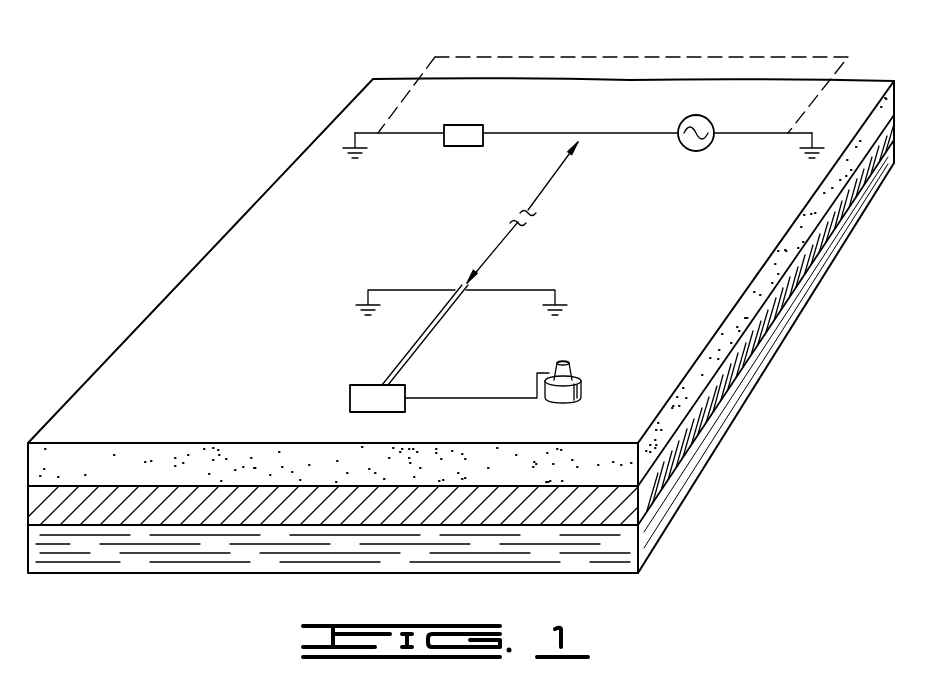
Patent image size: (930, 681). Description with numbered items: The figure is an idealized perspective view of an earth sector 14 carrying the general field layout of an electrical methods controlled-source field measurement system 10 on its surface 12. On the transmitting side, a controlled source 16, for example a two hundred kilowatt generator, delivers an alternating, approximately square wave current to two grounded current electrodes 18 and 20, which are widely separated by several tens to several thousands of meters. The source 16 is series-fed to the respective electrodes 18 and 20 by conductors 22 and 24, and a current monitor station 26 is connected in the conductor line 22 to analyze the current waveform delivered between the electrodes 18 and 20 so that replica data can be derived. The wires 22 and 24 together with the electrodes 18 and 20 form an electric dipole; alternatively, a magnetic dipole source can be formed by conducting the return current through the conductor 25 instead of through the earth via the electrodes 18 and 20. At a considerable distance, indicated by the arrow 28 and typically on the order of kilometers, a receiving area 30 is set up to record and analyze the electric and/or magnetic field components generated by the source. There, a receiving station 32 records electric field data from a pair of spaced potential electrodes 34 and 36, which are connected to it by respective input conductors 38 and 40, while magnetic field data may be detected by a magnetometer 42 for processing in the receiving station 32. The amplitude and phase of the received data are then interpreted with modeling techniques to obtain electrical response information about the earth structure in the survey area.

The field measurement system 10 is at (637, 55).
The surface 12 is at (337, 244).
The earth sector 14 is at (220, 244).
The controlled source 16 is at (700, 115).
The grounded current electrode 18 is at (350, 138).
The grounded current electrode 20 is at (812, 133).
The conductor 22 is at (525, 133).
The conductor 24 is at (747, 138).
The conductor 25 is at (768, 57).
The current monitor station 26 is at (463, 125).
The arrow 28 is at (550, 184).
The receiving area 30 is at (478, 354).
The receiving station 32 is at (362, 385).
The potential electrode 34 is at (365, 298).
The potential electrode 36 is at (560, 293).
The input conductor 38 is at (430, 317).
The input conductor 40 is at (460, 313).
The magnetometer 42 is at (580, 386).